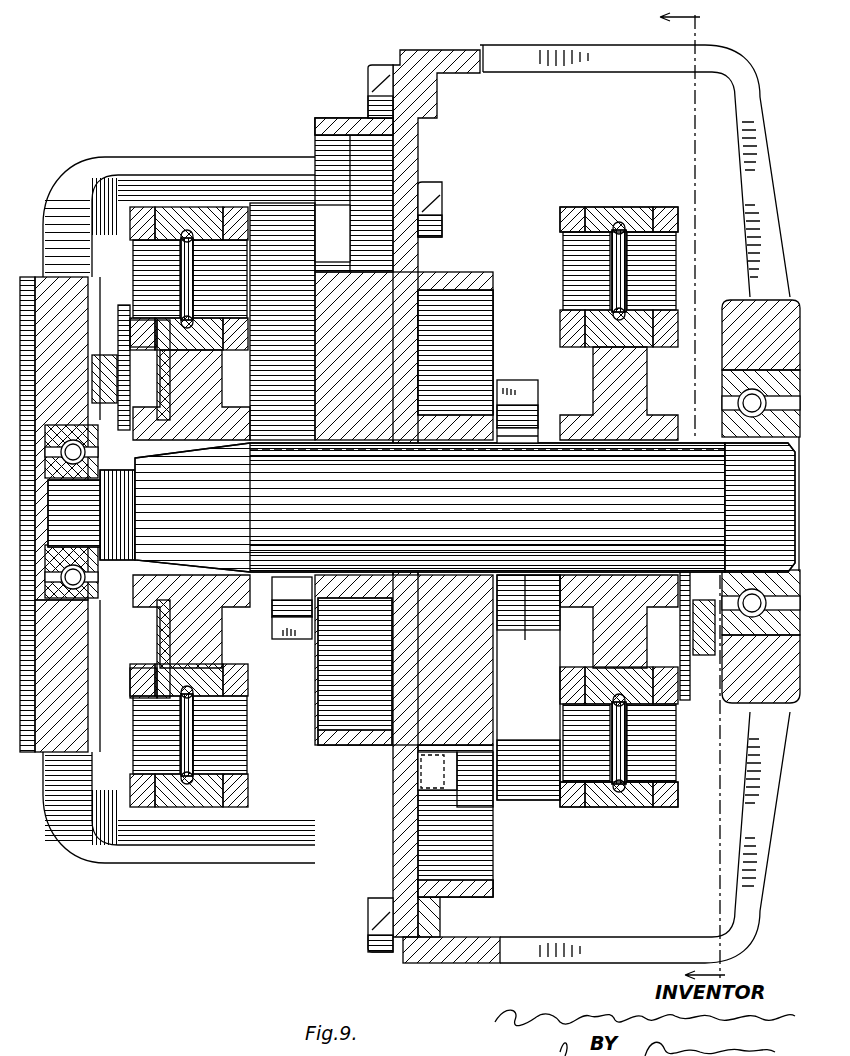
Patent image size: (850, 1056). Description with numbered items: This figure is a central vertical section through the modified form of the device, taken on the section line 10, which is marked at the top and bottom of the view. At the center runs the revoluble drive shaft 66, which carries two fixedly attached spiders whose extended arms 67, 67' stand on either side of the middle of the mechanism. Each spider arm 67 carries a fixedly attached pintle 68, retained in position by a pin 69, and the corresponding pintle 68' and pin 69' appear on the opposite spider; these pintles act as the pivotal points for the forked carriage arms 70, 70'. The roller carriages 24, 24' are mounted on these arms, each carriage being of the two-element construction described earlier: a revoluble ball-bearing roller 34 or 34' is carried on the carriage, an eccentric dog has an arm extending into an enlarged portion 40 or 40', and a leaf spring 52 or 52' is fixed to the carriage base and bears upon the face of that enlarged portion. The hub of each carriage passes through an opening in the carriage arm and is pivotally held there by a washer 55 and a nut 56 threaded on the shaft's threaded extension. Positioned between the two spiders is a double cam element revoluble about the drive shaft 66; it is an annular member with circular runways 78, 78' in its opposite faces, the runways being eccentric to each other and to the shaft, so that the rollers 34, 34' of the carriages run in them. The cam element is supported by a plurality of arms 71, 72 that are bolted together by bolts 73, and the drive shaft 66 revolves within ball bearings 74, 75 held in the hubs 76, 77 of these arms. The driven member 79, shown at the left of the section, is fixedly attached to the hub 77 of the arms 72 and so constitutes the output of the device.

The section line 10 is at (676, 496).
The roller carriage 24 is at (282, 321).
The roller carriage 24' is at (528, 687).
The revoluble ball-bearing roller 34 is at (332, 233).
The revoluble ball-bearing roller 34' is at (478, 787).
The enlarged portion 40 is at (292, 642).
The enlarged portion 40' is at (517, 391).
The leaf spring 52 is at (292, 597).
The leaf spring 52' is at (517, 459).
The washer 55 is at (122, 312).
The nut 56 is at (118, 355).
The drive shaft 66 is at (421, 507).
The spider arm 67 is at (191, 509).
The spider arm 67' is at (619, 507).
The pintle 68 is at (189, 507).
The pintle 68' is at (619, 507).
The pin 69 is at (203, 511).
The pin 69' is at (635, 509).
The forked carriage arm 70 is at (187, 508).
The forked carriage arm 70' is at (623, 516).
The arm 71 is at (722, 62).
The arm 72 is at (147, 158).
The bolt 73 is at (378, 75).
The ball bearing 74 is at (738, 398).
The ball bearing 75 is at (100, 600).
The hub 76 is at (736, 350).
The hub 77 is at (78, 648).
The circular runway 78 is at (335, 431).
The circular runway 78' is at (479, 593).
The driven member 79 is at (35, 277).